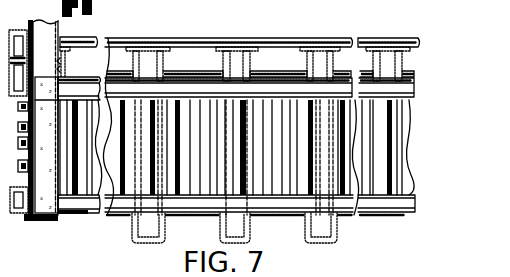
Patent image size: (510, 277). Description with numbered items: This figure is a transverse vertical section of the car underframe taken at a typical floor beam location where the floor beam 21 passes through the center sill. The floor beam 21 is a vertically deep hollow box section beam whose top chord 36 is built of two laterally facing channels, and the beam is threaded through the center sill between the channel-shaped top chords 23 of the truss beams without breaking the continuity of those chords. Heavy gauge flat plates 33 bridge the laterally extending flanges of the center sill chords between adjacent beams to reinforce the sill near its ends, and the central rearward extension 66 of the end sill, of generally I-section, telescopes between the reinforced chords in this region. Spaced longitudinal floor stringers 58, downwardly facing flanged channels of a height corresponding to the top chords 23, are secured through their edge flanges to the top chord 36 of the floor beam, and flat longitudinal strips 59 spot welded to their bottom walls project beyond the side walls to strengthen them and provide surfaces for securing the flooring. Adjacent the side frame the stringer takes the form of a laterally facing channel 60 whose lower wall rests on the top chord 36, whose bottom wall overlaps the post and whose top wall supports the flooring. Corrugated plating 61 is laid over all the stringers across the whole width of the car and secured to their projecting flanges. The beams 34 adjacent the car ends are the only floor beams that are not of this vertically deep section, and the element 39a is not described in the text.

The side bracket 39a is at (13, 48).
The floor beam adjacent end 34 is at (94, 12).
The laterally facing channel 60 is at (64, 41).
The top chord 36 is at (88, 80).
The floor beam 21 is at (86, 200).
The corrugated plating 61 is at (187, 40).
The central rearward extension 66 is at (229, 21).
The top chord 23 is at (251, 58).
The flat plate 33 is at (283, 71).
The flat longitudinal strip 59 is at (418, 23).
The floor stringer 58 is at (386, 76).